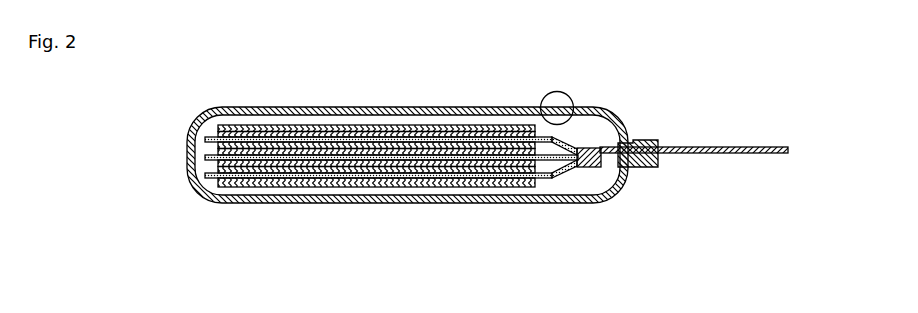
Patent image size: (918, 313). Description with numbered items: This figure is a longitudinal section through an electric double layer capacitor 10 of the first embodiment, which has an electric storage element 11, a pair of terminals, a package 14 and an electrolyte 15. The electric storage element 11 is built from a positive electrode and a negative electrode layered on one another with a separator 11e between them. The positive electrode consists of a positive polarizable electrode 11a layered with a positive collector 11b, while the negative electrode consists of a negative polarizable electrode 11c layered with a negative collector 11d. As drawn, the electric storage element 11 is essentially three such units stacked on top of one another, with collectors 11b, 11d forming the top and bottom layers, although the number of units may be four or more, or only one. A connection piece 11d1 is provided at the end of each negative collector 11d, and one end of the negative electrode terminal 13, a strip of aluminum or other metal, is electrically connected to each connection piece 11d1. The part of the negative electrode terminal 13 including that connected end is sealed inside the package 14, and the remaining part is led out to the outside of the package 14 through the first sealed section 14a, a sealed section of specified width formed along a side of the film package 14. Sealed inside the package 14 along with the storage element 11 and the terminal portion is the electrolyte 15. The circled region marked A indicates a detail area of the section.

The electric double layer capacitor 10 is at (486, 159).
The electric storage element 11 is at (403, 160).
The positive polarizable electrode 11a is at (275, 136).
The positive collector 11b is at (308, 145).
The negative polarizable electrode 11c is at (349, 128).
The negative collector 11d is at (403, 160).
The connection piece 11d1 is at (572, 168).
The separator 11e is at (430, 128).
The negative electrode terminal 13 is at (735, 147).
The package 14 is at (503, 107).
The first sealed section 14a is at (641, 140).
The electrolyte 15 is at (592, 128).
The detail region A is at (557, 91).